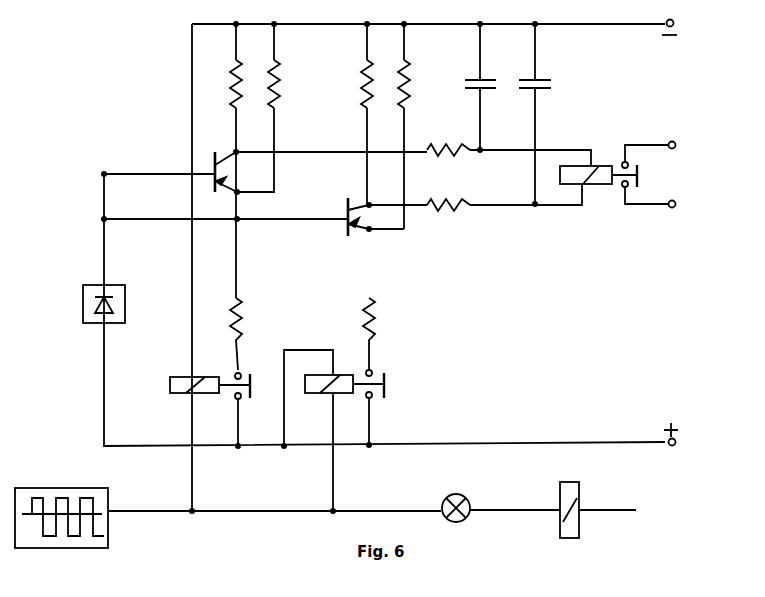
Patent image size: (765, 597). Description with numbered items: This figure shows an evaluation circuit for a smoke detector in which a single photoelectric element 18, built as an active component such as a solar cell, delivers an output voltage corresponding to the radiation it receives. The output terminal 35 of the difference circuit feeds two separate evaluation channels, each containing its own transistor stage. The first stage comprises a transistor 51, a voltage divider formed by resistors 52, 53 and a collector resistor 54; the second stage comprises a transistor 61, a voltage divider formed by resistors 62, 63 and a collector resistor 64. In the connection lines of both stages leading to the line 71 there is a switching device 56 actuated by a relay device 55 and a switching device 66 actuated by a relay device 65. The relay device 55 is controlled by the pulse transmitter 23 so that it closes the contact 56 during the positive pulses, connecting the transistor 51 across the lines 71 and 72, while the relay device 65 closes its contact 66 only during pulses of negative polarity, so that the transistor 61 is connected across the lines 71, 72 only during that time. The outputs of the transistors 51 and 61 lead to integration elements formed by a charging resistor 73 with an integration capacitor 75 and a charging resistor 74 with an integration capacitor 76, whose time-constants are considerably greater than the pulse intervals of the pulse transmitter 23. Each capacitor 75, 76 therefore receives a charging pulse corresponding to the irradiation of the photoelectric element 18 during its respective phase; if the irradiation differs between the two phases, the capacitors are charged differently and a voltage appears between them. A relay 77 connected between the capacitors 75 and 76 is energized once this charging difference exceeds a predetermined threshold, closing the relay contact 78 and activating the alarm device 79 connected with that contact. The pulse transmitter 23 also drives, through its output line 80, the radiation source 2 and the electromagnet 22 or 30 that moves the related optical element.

The radiation source 2 is at (449, 502).
The photoelectric element 18 is at (91, 304).
The electromagnet 22 is at (597, 510).
The electromagnet 30 is at (597, 510).
The pulse transmitter 23 is at (61, 508).
The output terminal 35 is at (118, 164).
The transistor 51 is at (231, 172).
The voltage divider 52 is at (249, 334).
The voltage divider 53 is at (285, 84).
The collector resistor 54 is at (222, 84).
The relay device 55 is at (205, 376).
The switching device 56 is at (250, 395).
The transistor 61 is at (345, 215).
The voltage divider 62 is at (382, 334).
The voltage divider 63 is at (416, 84).
The collector resistor 64 is at (352, 84).
The relay device 65 is at (344, 394).
The switching device 66 is at (387, 384).
The line 71 is at (640, 434).
The line 72 is at (633, 32).
The charging resistor 73 is at (448, 141).
The charging resistor 74 is at (448, 217).
The integration capacitor 75 is at (475, 74).
The integration capacitor 76 is at (542, 74).
The relay 77 is at (598, 185).
The relay contact 78 is at (642, 175).
The alarm device 79 is at (658, 175).
The output line 80 is at (265, 500).